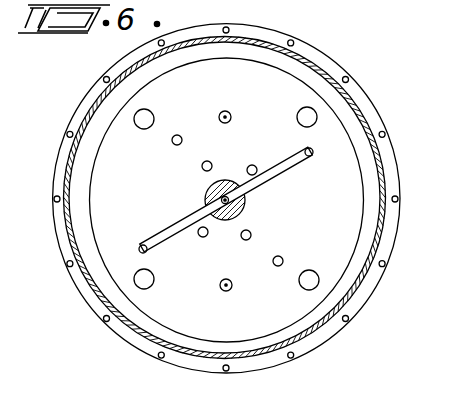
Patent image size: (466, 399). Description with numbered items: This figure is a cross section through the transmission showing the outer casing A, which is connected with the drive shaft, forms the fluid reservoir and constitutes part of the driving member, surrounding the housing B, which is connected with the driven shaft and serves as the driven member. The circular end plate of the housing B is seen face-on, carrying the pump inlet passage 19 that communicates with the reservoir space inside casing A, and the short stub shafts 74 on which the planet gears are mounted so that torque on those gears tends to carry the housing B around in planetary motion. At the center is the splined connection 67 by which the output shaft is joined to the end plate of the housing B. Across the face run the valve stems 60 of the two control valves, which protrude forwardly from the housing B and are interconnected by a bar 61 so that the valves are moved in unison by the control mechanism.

The pump inlet passage 19 is at (310, 280).
The valve stem 60 is at (305, 151).
The bar 61 is at (277, 170).
The splined connection 67 is at (206, 196).
The stub shaft 74 is at (231, 112).
The casing A is at (383, 161).
The housing B is at (365, 190).